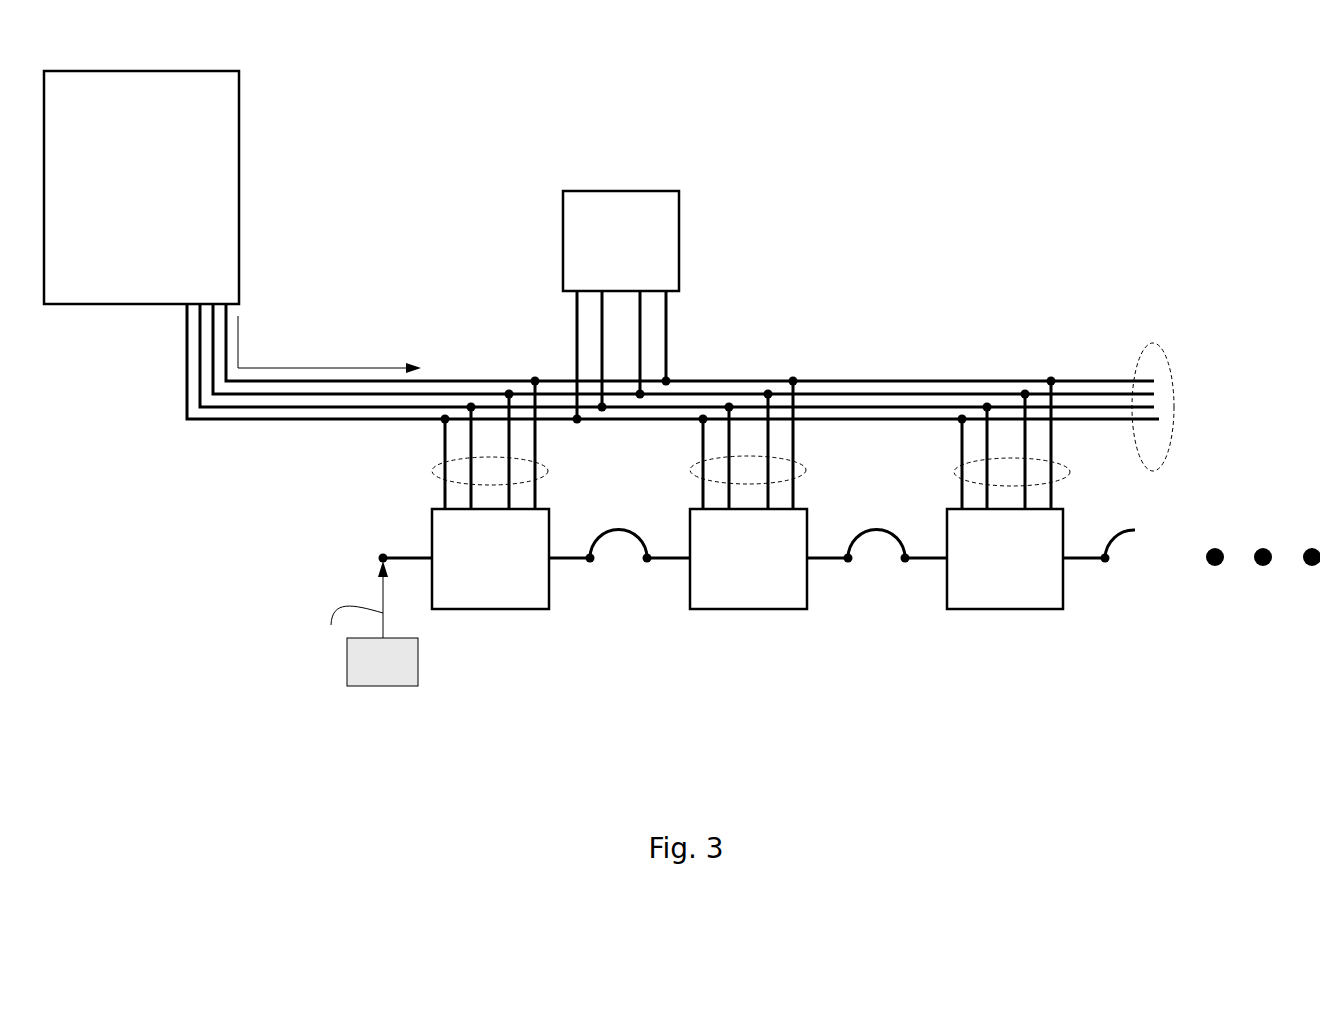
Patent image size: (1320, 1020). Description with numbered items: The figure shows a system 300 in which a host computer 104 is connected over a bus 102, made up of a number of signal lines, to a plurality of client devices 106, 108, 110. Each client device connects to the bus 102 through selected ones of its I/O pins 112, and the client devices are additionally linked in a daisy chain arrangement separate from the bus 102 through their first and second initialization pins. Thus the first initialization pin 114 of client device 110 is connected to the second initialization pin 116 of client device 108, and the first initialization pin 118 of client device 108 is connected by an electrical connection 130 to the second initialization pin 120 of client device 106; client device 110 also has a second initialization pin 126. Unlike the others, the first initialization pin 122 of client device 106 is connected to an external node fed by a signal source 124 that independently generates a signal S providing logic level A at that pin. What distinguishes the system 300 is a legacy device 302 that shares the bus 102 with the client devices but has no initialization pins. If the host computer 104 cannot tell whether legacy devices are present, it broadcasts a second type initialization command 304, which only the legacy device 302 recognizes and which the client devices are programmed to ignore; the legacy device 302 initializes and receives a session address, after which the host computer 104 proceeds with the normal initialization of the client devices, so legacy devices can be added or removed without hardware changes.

The host computer 104 is at (141, 187).
The bus 102 is at (1153, 345).
The second type initialization command 304 is at (355, 368).
The legacy device 302 is at (621, 307).
The client device 106 is at (490, 493).
The client device 108 is at (748, 493).
The client device 110 is at (1005, 493).
The I/O pins 112 is at (548, 470).
The first initialization pin 122 is at (384, 552).
The signal source 124 is at (344, 631).
The second initialization pin 120 is at (592, 566).
The electrical connection 130 is at (620, 528).
The first initialization pin 118 is at (668, 566).
The second initialization pin 116 is at (848, 568).
The first initialization pin 114 is at (925, 566).
The second initialization pin 126 is at (1105, 567).
The system 300 is at (188, 782).